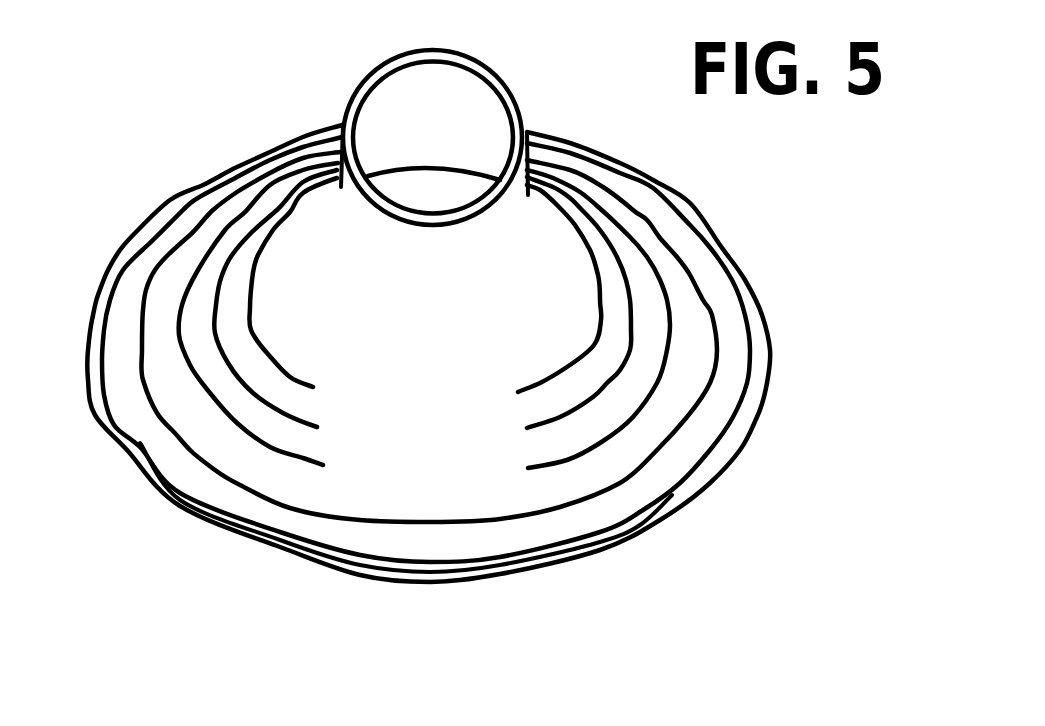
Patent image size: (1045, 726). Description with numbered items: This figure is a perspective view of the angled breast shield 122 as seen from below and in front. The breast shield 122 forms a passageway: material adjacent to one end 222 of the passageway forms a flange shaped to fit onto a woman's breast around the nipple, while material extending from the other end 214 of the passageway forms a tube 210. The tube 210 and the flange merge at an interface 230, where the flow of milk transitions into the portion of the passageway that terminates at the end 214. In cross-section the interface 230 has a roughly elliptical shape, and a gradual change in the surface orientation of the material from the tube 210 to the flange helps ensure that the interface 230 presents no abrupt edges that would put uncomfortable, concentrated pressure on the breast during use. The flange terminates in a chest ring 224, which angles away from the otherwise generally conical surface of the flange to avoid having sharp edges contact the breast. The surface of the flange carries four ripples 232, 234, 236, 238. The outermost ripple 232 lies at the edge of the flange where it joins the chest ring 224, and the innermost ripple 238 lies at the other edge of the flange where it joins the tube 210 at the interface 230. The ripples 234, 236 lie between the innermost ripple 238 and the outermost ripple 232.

The breast shield 122 is at (162, 146).
The tube 210 is at (334, 99).
The end 214 is at (493, 78).
The end 222 is at (700, 488).
The chest ring 224 is at (127, 395).
The interface 230 is at (418, 167).
The outermost ripple 232 is at (357, 515).
The ripple 234 is at (330, 455).
The ripple 236 is at (545, 425).
The innermost ripple 238 is at (558, 370).